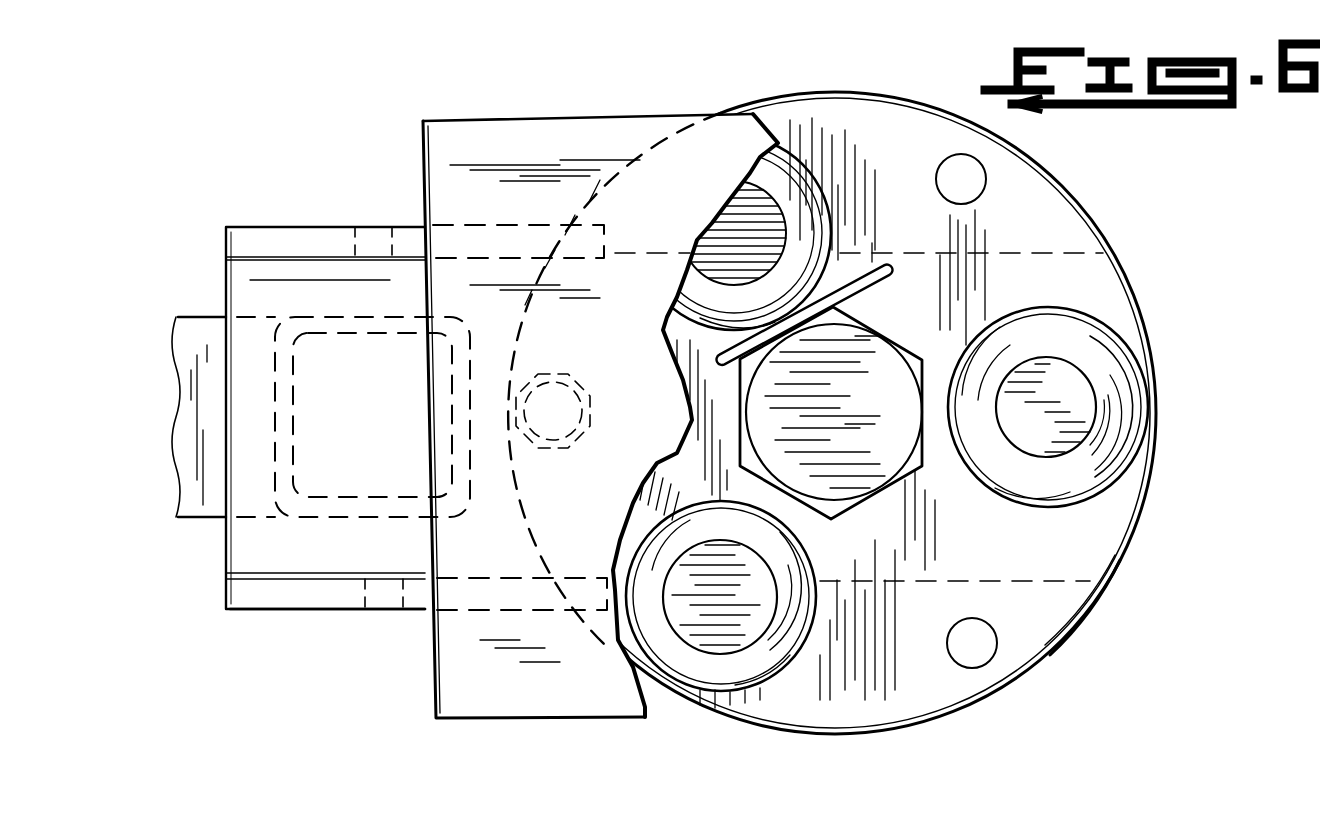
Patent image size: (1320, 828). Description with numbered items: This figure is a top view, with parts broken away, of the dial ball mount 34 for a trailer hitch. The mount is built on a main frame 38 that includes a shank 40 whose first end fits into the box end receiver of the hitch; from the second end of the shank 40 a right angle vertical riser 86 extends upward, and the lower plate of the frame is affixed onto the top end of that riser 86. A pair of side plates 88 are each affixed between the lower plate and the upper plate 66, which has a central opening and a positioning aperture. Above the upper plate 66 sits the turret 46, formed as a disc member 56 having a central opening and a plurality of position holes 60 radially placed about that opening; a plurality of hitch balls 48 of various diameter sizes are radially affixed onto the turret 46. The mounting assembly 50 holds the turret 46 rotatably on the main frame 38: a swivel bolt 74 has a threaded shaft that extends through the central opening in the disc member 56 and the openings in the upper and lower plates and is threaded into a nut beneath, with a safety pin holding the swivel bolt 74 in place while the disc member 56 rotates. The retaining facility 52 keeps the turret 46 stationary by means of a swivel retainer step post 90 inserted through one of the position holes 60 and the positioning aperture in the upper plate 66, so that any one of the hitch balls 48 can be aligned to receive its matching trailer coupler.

The dial ball mount 34 is at (1150, 252).
The main frame 38 is at (296, 611).
The shank 40 is at (197, 500).
The turret 46 is at (1088, 609).
The hitch balls 48 is at (1045, 475).
The mounting assembly 50 is at (893, 338).
The retaining facility 52 is at (497, 119).
The disc member 56 is at (1040, 626).
The position holes 60 is at (982, 636).
The upper plate 66 is at (258, 298).
The swivel bolt 74 is at (842, 485).
The riser 86 is at (395, 520).
The side plates 88 is at (404, 240).
The swivel retainer step post 90 is at (577, 133).